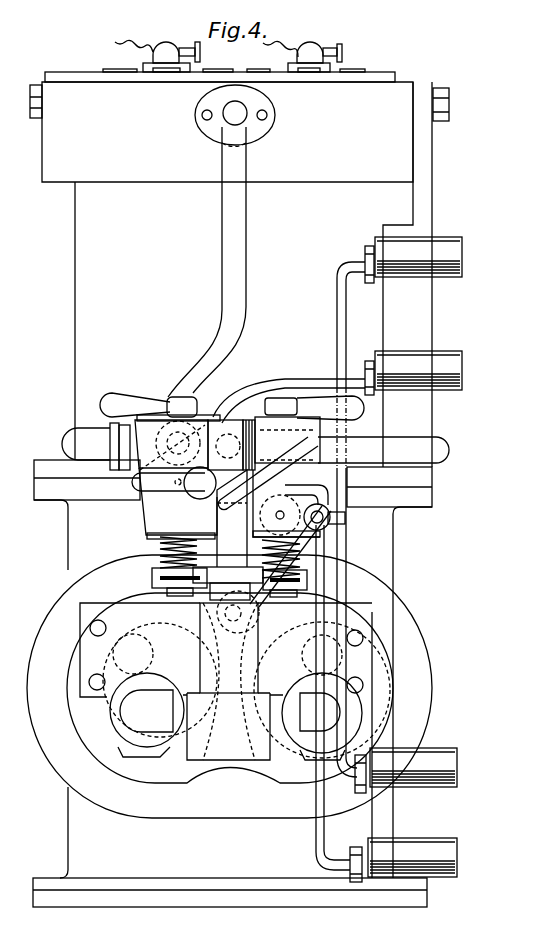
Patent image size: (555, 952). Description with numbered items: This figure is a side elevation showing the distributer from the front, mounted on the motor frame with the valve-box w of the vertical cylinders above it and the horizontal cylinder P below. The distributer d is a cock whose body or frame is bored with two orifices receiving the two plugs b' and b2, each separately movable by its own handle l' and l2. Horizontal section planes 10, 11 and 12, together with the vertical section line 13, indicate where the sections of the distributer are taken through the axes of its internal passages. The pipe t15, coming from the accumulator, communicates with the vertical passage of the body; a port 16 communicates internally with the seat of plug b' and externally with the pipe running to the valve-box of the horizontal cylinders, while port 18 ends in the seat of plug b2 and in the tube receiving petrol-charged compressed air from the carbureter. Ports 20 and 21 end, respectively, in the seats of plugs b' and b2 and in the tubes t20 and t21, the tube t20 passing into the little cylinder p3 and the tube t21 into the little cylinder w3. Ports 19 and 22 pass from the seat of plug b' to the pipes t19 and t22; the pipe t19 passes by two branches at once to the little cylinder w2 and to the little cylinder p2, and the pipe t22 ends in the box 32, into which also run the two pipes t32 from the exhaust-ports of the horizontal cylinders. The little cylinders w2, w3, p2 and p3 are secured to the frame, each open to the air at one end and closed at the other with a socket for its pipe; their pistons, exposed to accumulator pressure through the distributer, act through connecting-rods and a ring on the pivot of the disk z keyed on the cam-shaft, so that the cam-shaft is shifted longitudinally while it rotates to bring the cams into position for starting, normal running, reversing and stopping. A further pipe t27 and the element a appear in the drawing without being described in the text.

The valve-box w is at (239, 127).
The pipe from reservoir t27 is at (231, 274).
The handle l2 is at (103, 407).
The plug b2 is at (146, 425).
The section plane 13 is at (236, 412).
The plug b' is at (287, 415).
The tube t21 is at (292, 380).
The port 16 is at (292, 405).
The handle l' is at (336, 409).
The little cylinder w2 is at (462, 256).
The little cylinder w3 is at (462, 375).
The little cylinder p2 is at (457, 765).
The little cylinder p3 is at (457, 856).
The pipe t19 is at (345, 317).
The port 18 is at (115, 430).
The section plane 10 is at (100, 446).
The pipe t15 is at (383, 450).
The section plane 11 is at (233, 483).
The port 21 is at (192, 492).
The distributer d is at (207, 483).
The port 20 is at (222, 500).
The section plane 12 is at (137, 515).
The passage 22 is at (348, 514).
The port 19 is at (232, 517).
The pipe t22 is at (320, 595).
The tube t20 is at (316, 834).
The cam circle a is at (302, 656).
The horizontal cylinder P is at (235, 680).
The box 32 is at (228, 675).
The pipe t32 is at (175, 700).
The disk z is at (229, 704).